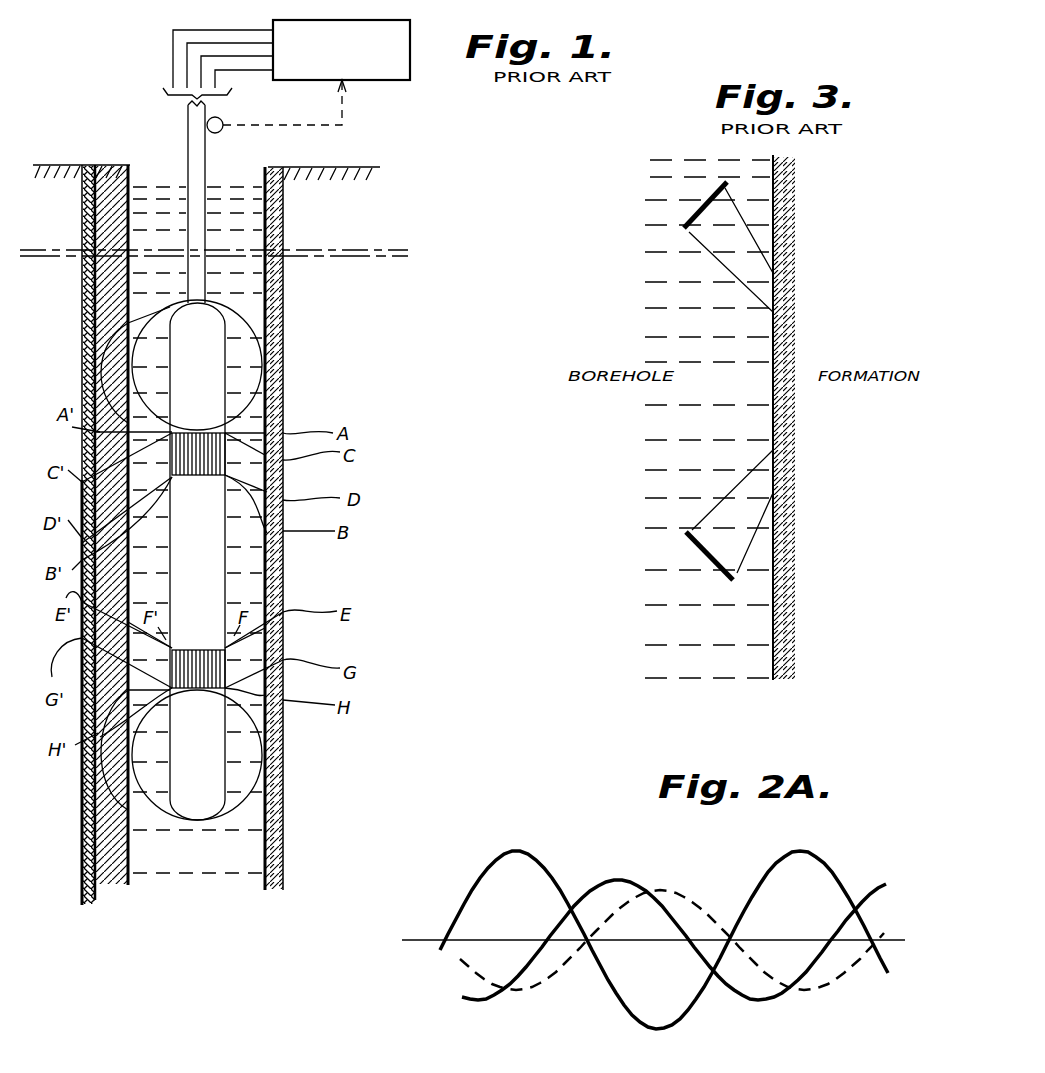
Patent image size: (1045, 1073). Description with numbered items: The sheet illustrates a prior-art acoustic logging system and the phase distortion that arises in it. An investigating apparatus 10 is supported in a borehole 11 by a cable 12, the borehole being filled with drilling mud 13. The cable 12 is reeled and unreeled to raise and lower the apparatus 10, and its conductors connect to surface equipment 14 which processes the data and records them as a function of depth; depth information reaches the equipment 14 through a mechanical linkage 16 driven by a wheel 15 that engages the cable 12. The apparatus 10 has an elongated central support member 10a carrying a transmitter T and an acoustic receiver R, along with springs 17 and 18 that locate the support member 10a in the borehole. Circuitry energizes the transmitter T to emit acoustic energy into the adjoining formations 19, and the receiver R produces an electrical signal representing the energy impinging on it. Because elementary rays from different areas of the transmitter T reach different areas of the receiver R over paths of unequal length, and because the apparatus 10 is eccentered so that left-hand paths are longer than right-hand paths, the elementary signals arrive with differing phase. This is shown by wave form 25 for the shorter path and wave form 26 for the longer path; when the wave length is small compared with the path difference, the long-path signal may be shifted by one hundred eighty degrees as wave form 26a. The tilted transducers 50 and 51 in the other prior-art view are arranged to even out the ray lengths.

In FIG. 1, the investigating apparatus 10 is at (238, 570).
In FIG. 1, the elongated central support member 10a is at (195, 551).
In FIG. 1, the borehole 11 is at (255, 290).
In FIG. 1, the cable 12 is at (200, 225).
In FIG. 1, the drilling mud 13 is at (162, 182).
In FIG. 1, the surface equipment 14 is at (397, 82).
In FIG. 1, the wheel 15 is at (216, 133).
In FIG. 1, the mechanical linkage 16 is at (305, 127).
In FIG. 1, the spring 17 is at (255, 408).
In FIG. 1, the spring 18 is at (342, 810).
In FIG. 1, the adjoining formations 19 is at (425, 482).
In FIG. 1, the transmitter T is at (190, 478).
In FIG. 1, the acoustic receiver R is at (181, 650).
In FIG. 2A, the wave form 25 is at (480, 877).
In FIG. 2A, the wave form 26 is at (623, 868).
In FIG. 2A, the phase-shifted wave form 26a is at (562, 963).
In FIG. 3, the acoustic transmitter 50 is at (683, 207).
In FIG. 3, the acoustic receiver 51 is at (688, 540).